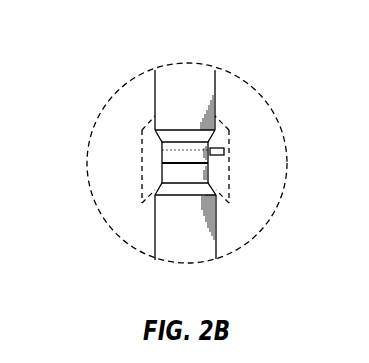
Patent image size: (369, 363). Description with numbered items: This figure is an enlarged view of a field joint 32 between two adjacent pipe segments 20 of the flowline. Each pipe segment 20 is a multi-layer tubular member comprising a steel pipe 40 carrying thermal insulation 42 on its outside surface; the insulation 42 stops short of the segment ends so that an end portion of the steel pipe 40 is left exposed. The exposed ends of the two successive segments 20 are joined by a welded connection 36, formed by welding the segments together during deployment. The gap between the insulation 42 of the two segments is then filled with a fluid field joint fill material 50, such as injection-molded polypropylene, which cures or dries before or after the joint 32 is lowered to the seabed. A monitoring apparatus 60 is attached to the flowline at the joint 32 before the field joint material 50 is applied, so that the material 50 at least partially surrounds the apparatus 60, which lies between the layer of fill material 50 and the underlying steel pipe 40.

The pipe segment 20 is at (217, 82).
The field joint 32 is at (112, 168).
The welded connection 36 is at (172, 168).
The steel pipe 40 is at (173, 153).
The insulation 42 is at (153, 83).
The field joint fill material 50 is at (230, 162).
The monitoring apparatus 60 is at (227, 143).